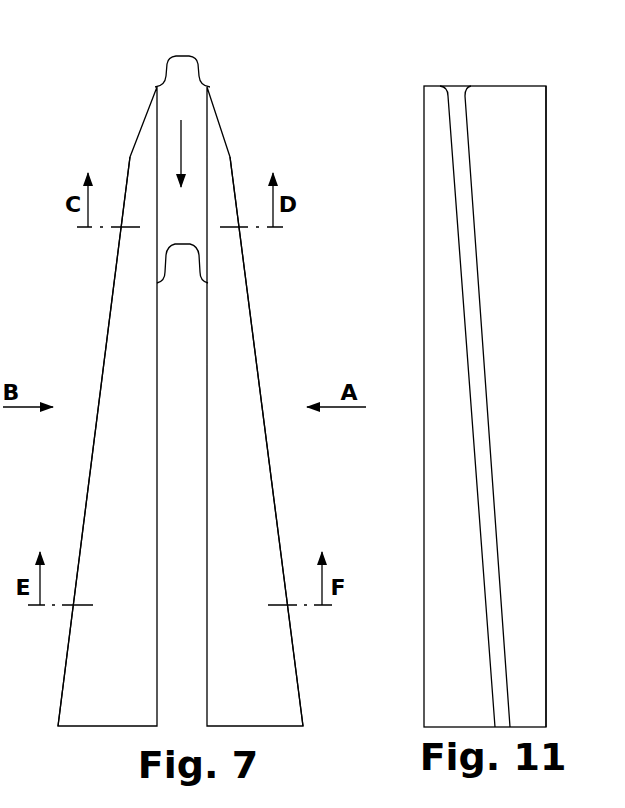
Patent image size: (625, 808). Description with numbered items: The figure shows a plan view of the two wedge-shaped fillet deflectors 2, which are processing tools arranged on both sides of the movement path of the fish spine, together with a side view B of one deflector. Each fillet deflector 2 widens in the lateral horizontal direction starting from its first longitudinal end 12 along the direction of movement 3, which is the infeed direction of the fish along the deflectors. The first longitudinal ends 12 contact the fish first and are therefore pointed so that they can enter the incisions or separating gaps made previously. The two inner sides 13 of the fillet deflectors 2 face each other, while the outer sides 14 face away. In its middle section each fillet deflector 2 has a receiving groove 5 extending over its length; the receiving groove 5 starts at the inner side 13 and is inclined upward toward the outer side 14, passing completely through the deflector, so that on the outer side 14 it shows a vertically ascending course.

In FIG. 7, the fillet deflector 2 is at (123, 317).
In FIG. 11, the fillet deflector 2 is at (525, 218).
In FIG. 7, the direction of movement 3 is at (179, 136).
In FIG. 11, the receiving groove 5 is at (460, 126).
In FIG. 7, the first longitudinal end 12 is at (182, 61).
In FIG. 7, the inner side 13 is at (182, 252).
In FIG. 7, the outer side 14 is at (101, 367).
In FIG. 11, the outer side 14 is at (498, 305).